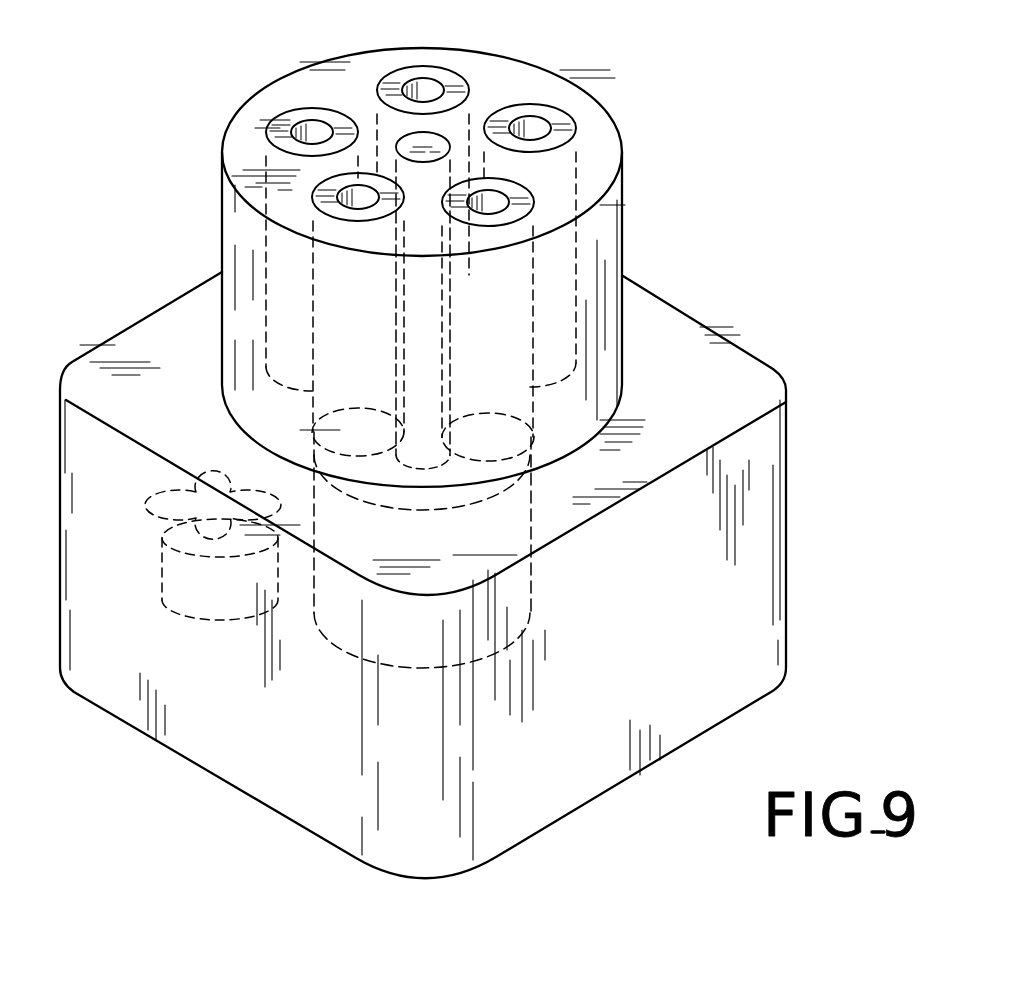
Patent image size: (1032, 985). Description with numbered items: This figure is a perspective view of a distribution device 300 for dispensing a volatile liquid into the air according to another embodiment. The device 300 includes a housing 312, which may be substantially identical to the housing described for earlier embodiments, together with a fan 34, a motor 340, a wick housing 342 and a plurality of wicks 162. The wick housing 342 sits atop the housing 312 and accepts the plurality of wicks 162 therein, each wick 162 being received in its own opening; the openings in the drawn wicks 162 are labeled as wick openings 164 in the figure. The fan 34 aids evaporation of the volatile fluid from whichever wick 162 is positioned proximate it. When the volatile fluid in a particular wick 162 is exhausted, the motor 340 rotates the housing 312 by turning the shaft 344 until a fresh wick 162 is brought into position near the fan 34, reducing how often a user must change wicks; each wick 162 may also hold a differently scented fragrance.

The device 300 is at (759, 153).
The housing 312 is at (794, 500).
The wick housing 342 is at (612, 272).
The wick 162 is at (282, 118).
The hole 164 is at (313, 121).
The shaft 344 is at (403, 457).
The motor 340 is at (530, 600).
The fan 34 is at (165, 598).